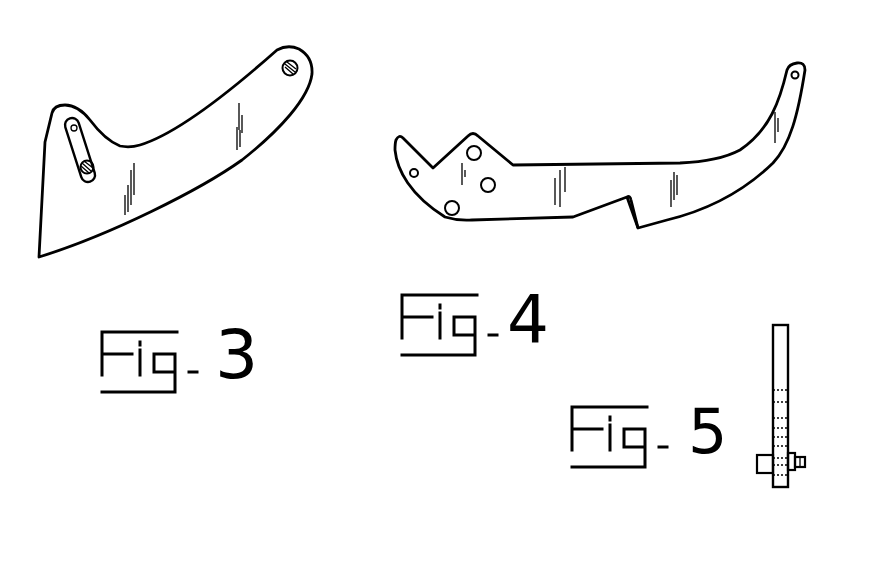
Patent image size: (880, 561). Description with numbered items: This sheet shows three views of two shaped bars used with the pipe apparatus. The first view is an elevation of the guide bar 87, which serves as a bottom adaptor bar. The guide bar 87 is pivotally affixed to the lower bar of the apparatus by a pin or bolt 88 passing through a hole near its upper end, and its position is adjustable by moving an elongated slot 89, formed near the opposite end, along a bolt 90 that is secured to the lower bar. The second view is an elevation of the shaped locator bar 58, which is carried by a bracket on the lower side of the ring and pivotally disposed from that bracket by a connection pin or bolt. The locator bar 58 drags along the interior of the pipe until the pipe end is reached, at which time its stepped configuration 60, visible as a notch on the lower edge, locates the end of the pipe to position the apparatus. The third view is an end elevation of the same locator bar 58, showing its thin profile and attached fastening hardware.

In FIG. 4, the locator bar 58 is at (714, 204).
In FIG. 5, the locator bar 58 is at (773, 347).
In FIG. 4, the stepped configuration 60 is at (628, 210).
In FIG. 3, the guide bar 87 is at (217, 178).
In FIG. 3, the pin or bolt 88 is at (295, 65).
In FIG. 3, the slot 89 is at (77, 127).
In FIG. 3, the bolt 90 is at (90, 173).